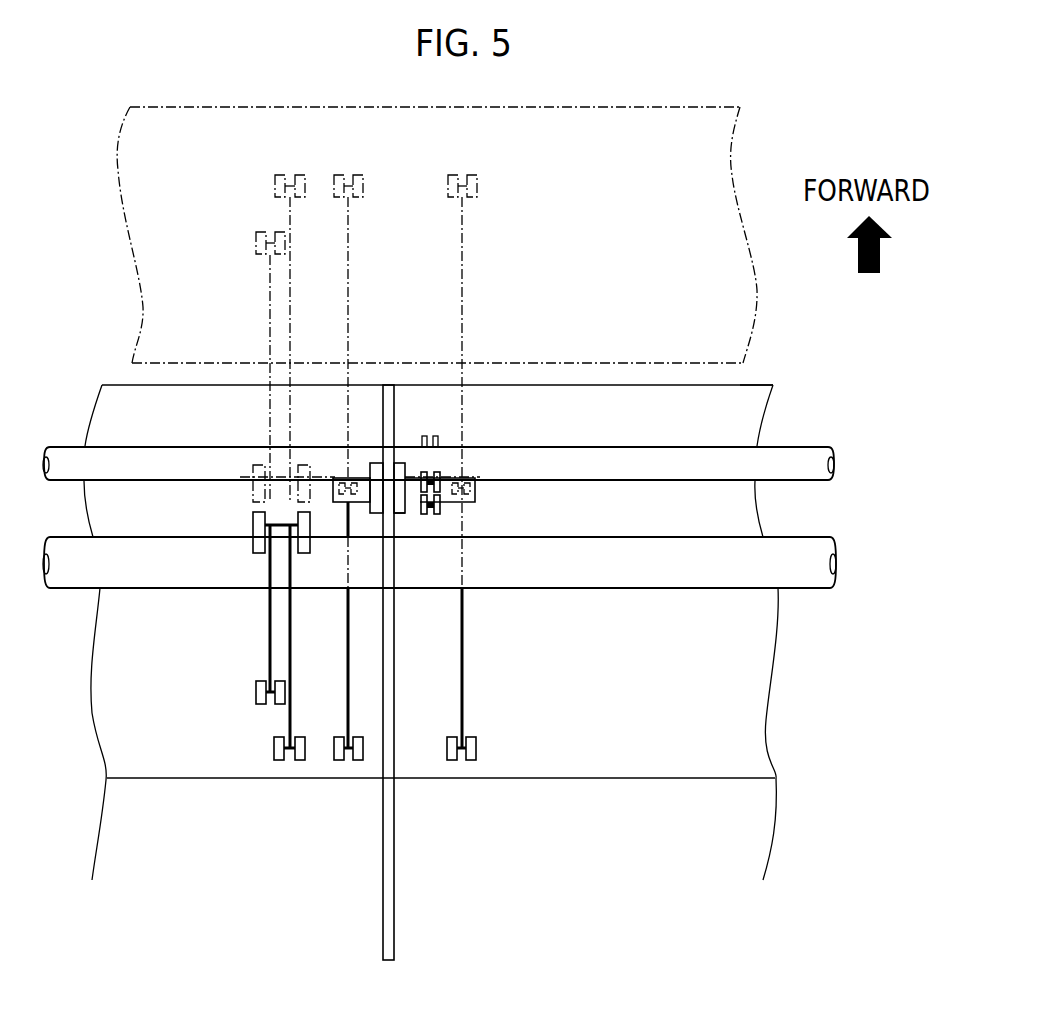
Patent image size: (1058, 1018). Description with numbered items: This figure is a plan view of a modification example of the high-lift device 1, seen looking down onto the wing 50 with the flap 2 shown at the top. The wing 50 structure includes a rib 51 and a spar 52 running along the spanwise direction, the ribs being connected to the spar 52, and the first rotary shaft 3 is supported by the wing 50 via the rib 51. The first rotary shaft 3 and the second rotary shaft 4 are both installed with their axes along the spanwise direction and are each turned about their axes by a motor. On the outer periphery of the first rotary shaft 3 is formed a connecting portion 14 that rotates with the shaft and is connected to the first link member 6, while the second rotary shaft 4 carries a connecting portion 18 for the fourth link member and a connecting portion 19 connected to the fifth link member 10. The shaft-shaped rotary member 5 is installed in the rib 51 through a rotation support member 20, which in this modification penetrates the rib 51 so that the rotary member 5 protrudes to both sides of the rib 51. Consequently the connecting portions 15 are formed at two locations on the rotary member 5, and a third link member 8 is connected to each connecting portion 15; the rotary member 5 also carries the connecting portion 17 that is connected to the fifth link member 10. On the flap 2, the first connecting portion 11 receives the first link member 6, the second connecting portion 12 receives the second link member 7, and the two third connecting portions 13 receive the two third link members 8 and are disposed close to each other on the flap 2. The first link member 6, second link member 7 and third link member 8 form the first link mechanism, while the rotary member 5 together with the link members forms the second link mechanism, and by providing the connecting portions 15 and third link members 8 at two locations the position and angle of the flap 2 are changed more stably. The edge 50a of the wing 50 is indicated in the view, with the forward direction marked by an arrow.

The high-lift device 1 is at (886, 443).
The flap 2 is at (718, 153).
The first rotary shaft 3 is at (63, 589).
The second rotary shaft 4 is at (60, 483).
The rotary member 5 is at (476, 504).
The first link member 6 is at (270, 305).
The second link member 7 is at (290, 216).
The third link member 8 is at (350, 278).
The fifth link member 10 is at (422, 496).
The first connecting portion 11 is at (257, 243).
The second connecting portion 12 is at (275, 187).
The third connecting portion 13 is at (364, 187).
The connecting portion 14 is at (252, 492).
The connecting portion 15 is at (347, 478).
The connecting portion 17 is at (441, 506).
The connecting portion 18 is at (424, 436).
The connecting portion 19 is at (440, 477).
The rotation support member 20 is at (405, 502).
The wing 50 is at (763, 820).
The edge of base plate 50a is at (762, 384).
The rib 51 is at (394, 890).
The spar 52 is at (173, 780).